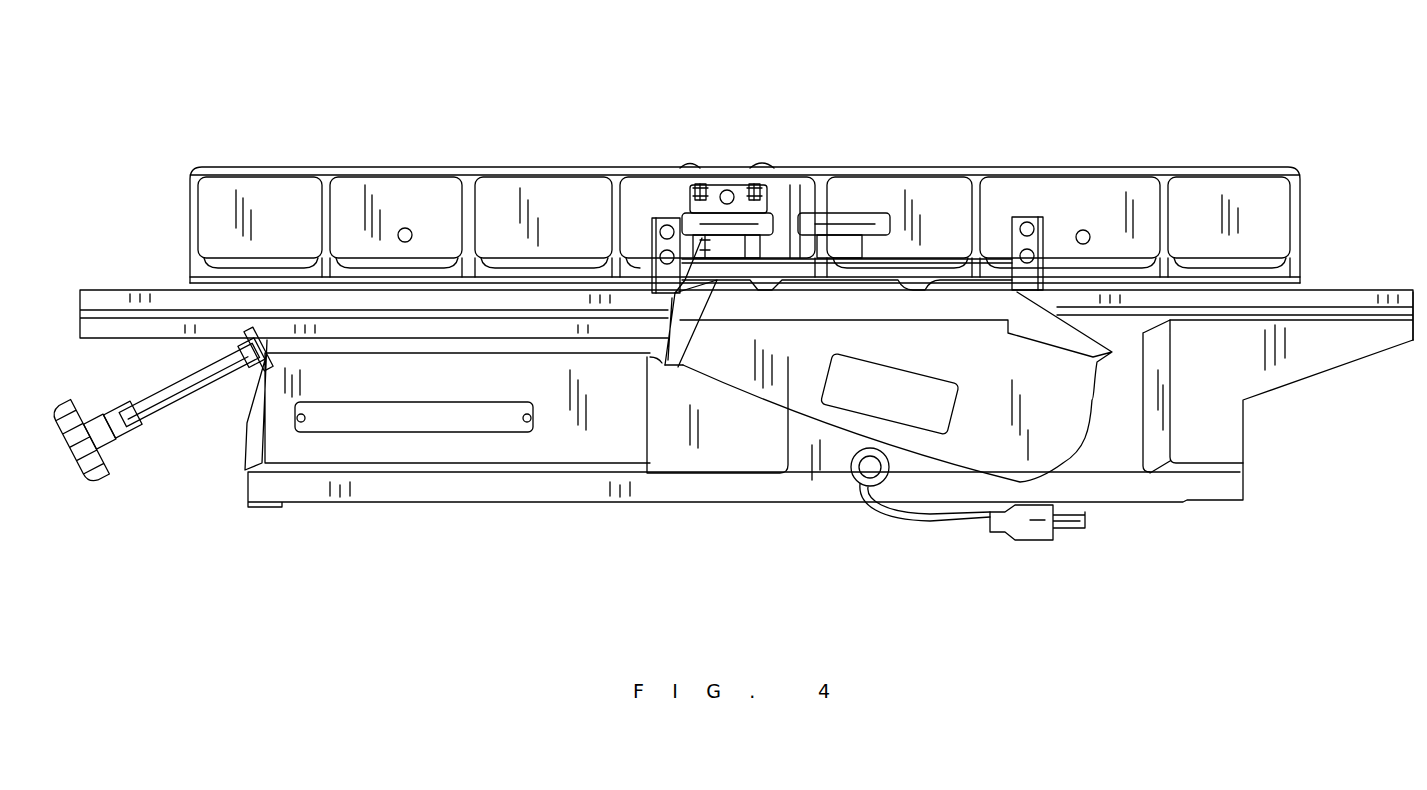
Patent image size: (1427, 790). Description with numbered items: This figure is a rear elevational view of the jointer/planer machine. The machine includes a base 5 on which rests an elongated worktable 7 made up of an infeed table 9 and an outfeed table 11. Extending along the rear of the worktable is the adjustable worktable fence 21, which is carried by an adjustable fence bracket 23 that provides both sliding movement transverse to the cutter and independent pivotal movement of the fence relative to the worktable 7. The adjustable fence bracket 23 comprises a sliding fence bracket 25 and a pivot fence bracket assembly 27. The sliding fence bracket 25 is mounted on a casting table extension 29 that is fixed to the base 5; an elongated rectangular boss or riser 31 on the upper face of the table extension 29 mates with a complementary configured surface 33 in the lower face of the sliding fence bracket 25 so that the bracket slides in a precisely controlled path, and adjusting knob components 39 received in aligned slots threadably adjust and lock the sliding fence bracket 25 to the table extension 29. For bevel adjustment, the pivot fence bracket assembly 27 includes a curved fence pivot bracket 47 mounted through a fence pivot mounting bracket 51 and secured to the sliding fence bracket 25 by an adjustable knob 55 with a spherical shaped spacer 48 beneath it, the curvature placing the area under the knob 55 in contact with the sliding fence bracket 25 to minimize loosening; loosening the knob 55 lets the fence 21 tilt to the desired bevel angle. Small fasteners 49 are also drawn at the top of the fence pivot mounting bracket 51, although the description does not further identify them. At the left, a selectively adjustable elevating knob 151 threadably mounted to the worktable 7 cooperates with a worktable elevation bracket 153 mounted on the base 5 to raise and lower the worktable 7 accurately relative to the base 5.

The base 5 is at (1105, 462).
The elongated worktable 7 is at (76, 298).
The infeed table 9 is at (153, 288).
The outfeed table 11 is at (1358, 289).
The adjustable worktable fence 21 is at (893, 199).
The adjustable fence bracket 23 is at (803, 188).
The sliding fence bracket 25 is at (993, 254).
The pivot fence bracket assembly 27 is at (730, 151).
The table extension 29 is at (738, 303).
The boss or riser 31 is at (798, 292).
The complementary configured surface 33 is at (903, 284).
The adjusting knob components 39 is at (845, 226).
The fence pivot bracket 47 is at (658, 214).
The spherical shaped spacer 48 is at (723, 258).
The bolts 49 is at (699, 191).
The fence pivot mounting bracket 51 is at (715, 186).
The adjustable knob 55 is at (737, 230).
The selectively adjustable elevating knob 151 is at (150, 425).
The worktable elevation bracket 153 is at (253, 372).